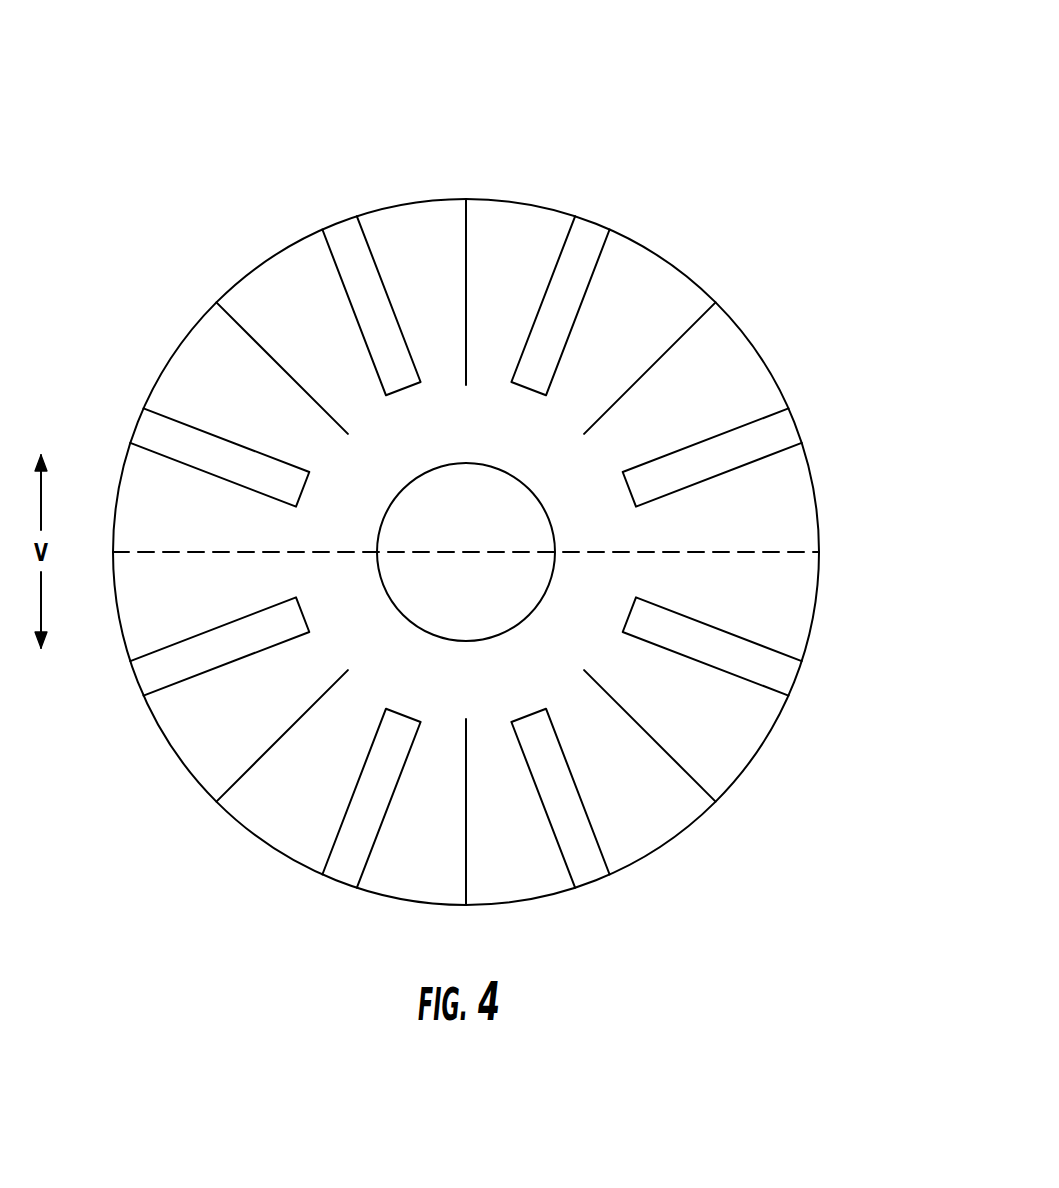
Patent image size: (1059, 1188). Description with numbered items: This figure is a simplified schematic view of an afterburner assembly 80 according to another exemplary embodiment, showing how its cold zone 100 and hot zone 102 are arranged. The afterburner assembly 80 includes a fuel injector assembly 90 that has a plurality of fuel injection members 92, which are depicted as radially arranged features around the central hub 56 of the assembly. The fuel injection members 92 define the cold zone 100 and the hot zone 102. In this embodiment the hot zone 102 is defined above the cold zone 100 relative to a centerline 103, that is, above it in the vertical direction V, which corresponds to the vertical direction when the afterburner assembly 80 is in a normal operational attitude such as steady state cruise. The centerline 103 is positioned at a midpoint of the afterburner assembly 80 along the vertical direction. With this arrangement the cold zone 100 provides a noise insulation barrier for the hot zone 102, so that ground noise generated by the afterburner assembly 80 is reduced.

The afterburner assembly 80 is at (774, 78).
The fuel injector assembly 90 is at (592, 145).
The fuel injection members 92 is at (250, 332).
The cold zone 100 is at (632, 790).
The hot zone 102 is at (698, 375).
The centerline 103 is at (790, 552).
The shaft bore 56 is at (392, 608).